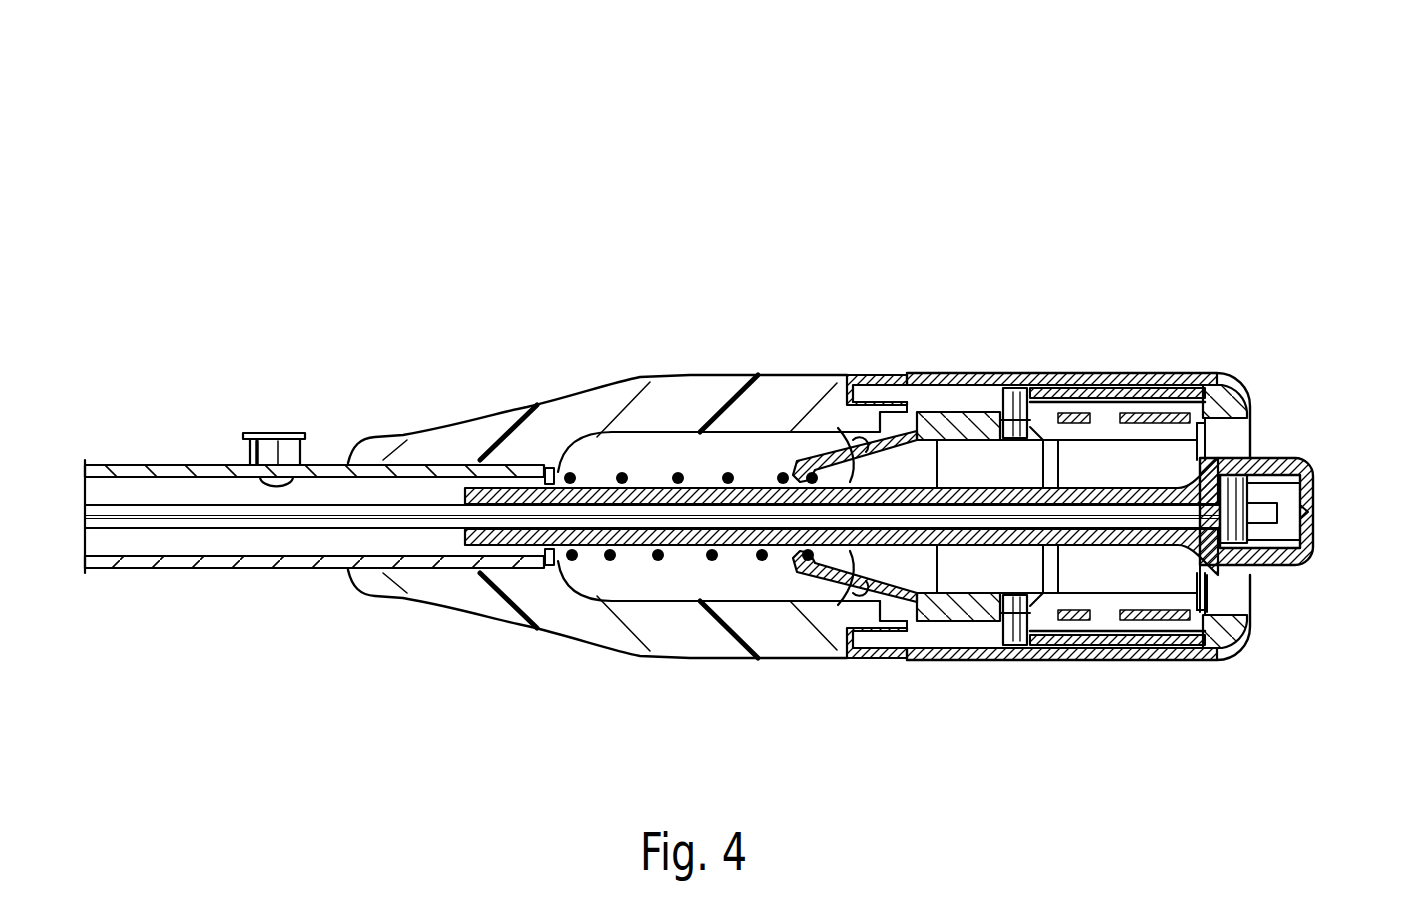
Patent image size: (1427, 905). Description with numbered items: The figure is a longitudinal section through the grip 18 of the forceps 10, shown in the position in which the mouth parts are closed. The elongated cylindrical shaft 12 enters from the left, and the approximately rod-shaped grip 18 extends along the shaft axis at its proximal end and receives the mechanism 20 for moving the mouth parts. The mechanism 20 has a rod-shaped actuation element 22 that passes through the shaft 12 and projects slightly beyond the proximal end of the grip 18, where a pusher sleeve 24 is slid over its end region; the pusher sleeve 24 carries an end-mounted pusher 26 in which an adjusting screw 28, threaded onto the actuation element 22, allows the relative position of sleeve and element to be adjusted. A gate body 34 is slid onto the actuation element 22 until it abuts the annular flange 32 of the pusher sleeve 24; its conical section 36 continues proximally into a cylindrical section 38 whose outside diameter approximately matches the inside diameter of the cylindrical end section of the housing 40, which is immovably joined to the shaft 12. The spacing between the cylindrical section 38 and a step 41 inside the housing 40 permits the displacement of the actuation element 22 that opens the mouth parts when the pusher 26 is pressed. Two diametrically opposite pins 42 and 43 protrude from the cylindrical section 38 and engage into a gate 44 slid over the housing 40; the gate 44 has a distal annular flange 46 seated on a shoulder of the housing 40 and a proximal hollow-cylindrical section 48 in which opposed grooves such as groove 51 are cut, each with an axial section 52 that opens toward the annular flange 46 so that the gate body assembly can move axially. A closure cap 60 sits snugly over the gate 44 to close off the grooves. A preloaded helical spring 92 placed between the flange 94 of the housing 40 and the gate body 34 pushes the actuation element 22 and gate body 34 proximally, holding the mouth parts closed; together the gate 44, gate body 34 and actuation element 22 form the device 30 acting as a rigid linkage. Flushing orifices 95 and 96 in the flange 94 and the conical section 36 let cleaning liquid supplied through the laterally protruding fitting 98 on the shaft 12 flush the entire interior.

The forceps 10 is at (755, 184).
The shaft 12 is at (118, 462).
The grip 18 is at (1213, 658).
The mechanism 20 is at (634, 574).
The actuation element 22 is at (306, 512).
The pusher sleeve 24 is at (1121, 486).
The pusher 26 is at (1313, 495).
The adjusting screw 28 is at (1313, 540).
The device 30 is at (812, 586).
The annular flange 32 is at (860, 442).
The gate body 34 is at (975, 428).
The conical section 36 is at (832, 464).
The cylindrical section 38 is at (1145, 614).
The housing 40 is at (686, 400).
The step 41 is at (890, 660).
The pin 42 is at (1018, 388).
The pin 43 is at (1015, 645).
The gate 44 is at (1090, 394).
The annular flange 46 is at (886, 378).
The hollow-cylindrical section 48 is at (1082, 647).
The groove 51 is at (935, 632).
The axial section 52 is at (931, 372).
The closure cap 60 is at (1231, 380).
The helical spring 92 is at (616, 471).
The flange 94 is at (555, 467).
The flushing orifice 95 is at (558, 549).
The flushing orifice 96 is at (822, 592).
The fitting 98 is at (272, 432).